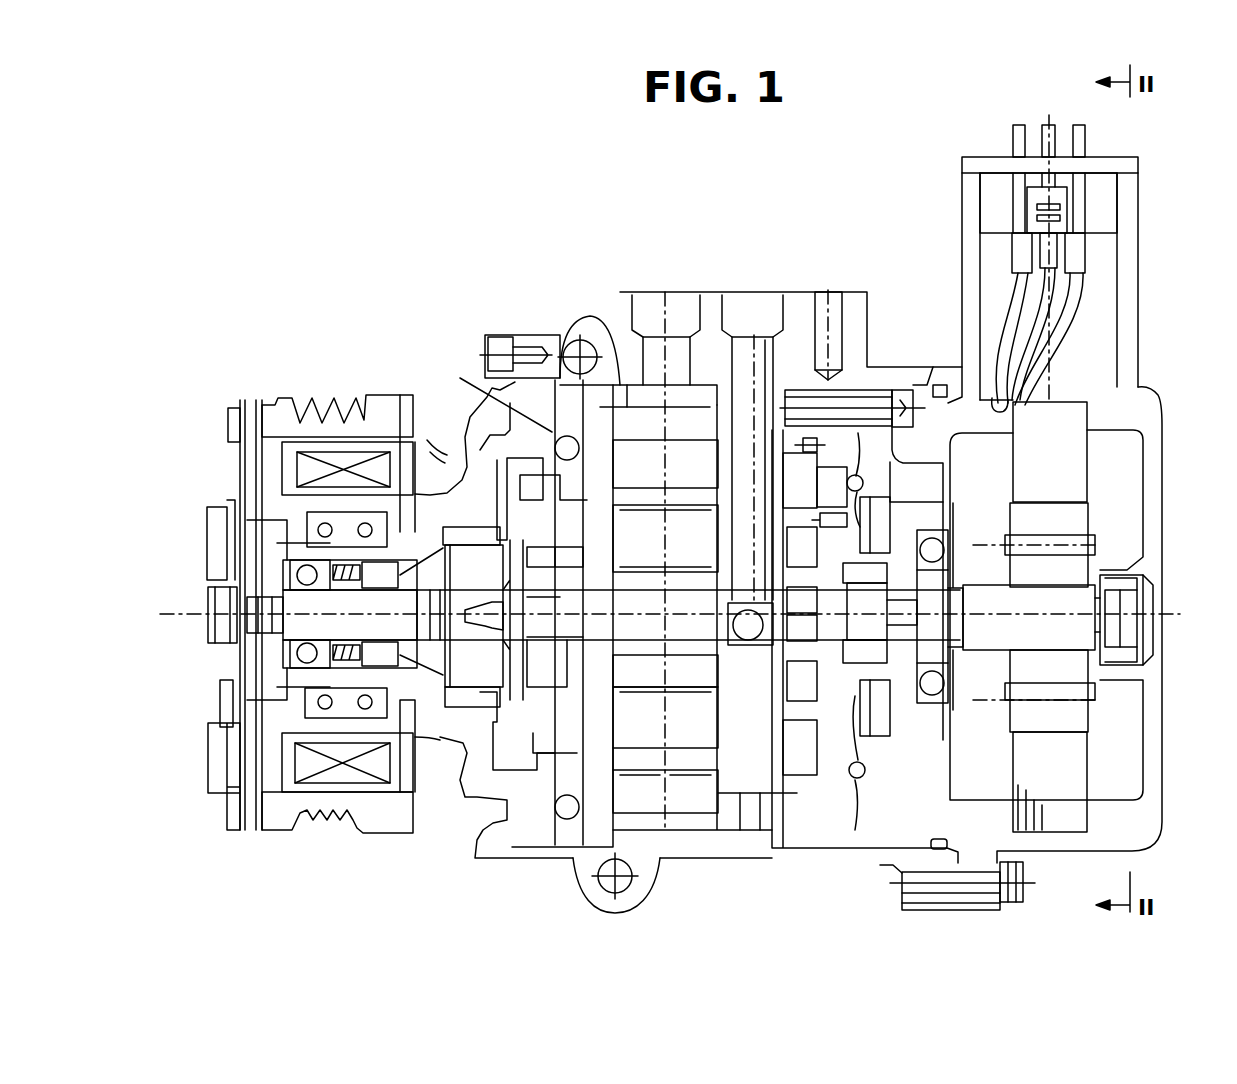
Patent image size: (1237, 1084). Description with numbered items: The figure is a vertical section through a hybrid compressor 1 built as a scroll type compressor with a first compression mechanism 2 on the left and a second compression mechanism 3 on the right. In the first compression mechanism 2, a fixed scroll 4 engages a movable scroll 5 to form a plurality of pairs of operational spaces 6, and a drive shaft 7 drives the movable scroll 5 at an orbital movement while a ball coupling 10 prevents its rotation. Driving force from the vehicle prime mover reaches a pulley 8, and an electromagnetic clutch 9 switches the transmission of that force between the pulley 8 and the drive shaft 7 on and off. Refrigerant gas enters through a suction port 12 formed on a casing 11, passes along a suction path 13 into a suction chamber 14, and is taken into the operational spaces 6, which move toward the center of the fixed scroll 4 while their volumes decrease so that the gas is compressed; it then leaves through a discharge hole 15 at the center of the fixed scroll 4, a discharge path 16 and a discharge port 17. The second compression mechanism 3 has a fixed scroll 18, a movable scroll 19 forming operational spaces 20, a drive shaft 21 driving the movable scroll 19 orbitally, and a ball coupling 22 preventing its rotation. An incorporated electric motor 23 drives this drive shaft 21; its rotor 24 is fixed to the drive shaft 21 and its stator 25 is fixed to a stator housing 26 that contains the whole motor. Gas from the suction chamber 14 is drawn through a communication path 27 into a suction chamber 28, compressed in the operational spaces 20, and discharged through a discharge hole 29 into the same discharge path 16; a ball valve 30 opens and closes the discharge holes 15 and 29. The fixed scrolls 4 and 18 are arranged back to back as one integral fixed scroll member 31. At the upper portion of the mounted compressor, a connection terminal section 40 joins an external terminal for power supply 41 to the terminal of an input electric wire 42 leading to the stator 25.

The hybrid compressor 1 is at (525, 328).
The first compression mechanism 2 is at (662, 820).
The second compression mechanism 3 is at (825, 810).
The fixed scroll 4 is at (695, 760).
The movable scroll 5 is at (638, 752).
The operational spaces 6 is at (693, 562).
The drive shaft 7 is at (290, 640).
The pulley 8 is at (281, 410).
The electromagnetic clutch 9 is at (342, 468).
The ball coupling 10 is at (505, 395).
The casing 11 is at (608, 345).
The suction port 12 is at (667, 300).
The suction path 13 is at (652, 370).
The suction chamber 14 is at (585, 405).
The discharge hole 15 is at (718, 632).
The discharge path 16 is at (763, 372).
The discharge port 17 is at (746, 312).
The fixed scroll 18 is at (800, 748).
The movable scroll 19 is at (793, 720).
The operational spaces 20 is at (797, 603).
The drive shaft 21 is at (1035, 642).
The ball coupling 22 is at (850, 790).
The electric motor 23 is at (1096, 473).
The rotor 24 is at (1070, 673).
The stator 25 is at (1072, 432).
The stator housing 26 is at (1152, 775).
The communication path 27 is at (752, 822).
The suction chamber 28 is at (830, 437).
The discharge hole 29 is at (785, 648).
The ball valve 30 is at (722, 648).
The integral fixed scroll member 31 is at (738, 787).
The connection terminal section 40 is at (1098, 212).
The external terminal for power supply 41 is at (1085, 143).
The input electric wire 42 is at (1078, 300).